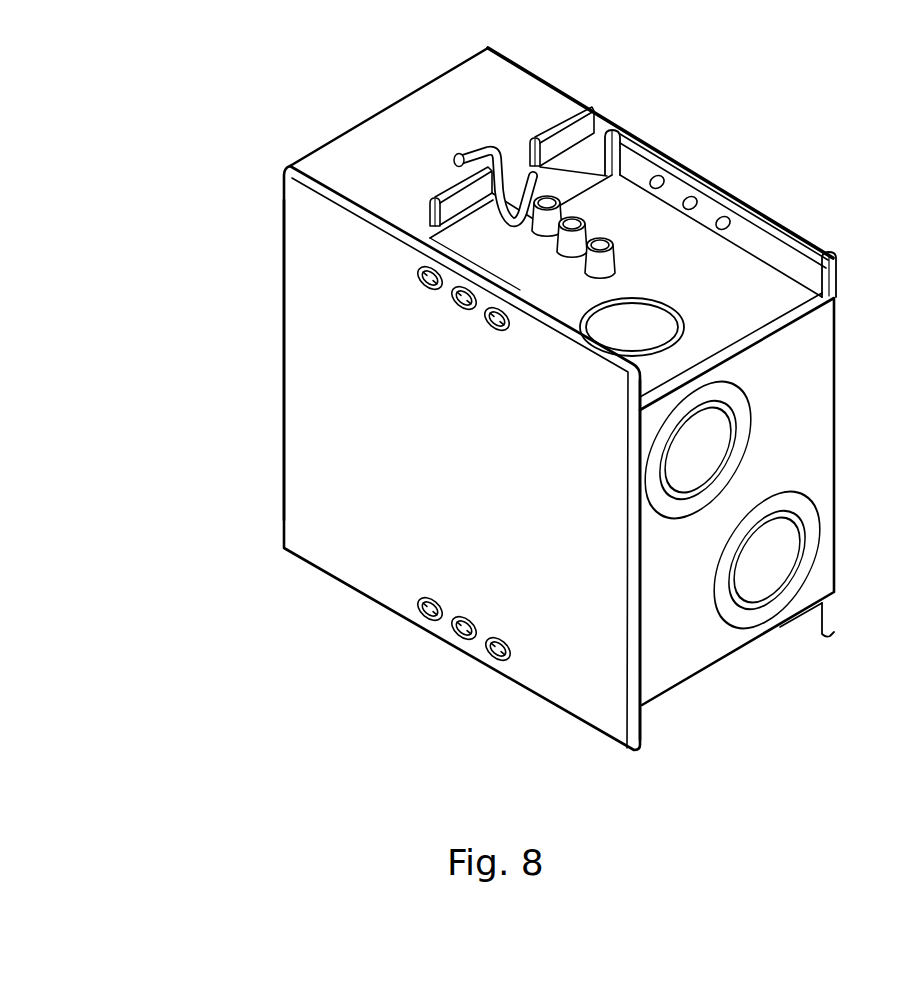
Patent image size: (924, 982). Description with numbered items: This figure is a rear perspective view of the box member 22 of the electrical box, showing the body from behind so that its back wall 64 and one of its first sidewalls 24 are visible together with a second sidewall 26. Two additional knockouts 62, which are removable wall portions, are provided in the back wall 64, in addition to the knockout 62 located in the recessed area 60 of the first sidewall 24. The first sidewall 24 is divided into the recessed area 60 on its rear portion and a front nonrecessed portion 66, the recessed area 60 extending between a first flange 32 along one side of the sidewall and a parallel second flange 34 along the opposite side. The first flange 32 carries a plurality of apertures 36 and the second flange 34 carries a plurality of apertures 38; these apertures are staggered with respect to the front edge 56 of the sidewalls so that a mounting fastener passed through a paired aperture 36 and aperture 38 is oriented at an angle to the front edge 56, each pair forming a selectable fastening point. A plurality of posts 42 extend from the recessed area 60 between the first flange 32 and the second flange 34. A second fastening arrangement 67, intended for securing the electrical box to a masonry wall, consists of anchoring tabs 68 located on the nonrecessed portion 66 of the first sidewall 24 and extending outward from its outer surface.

The box member 22 is at (222, 120).
The first sidewall 24 is at (547, 93).
The second sidewall 26 is at (462, 446).
The first flange 32 is at (633, 381).
The second flange 34 is at (838, 265).
The apertures 36 is at (428, 287).
The apertures 38 is at (658, 180).
The posts 42 is at (602, 243).
The front edge 56 is at (284, 360).
The recessed area 60 is at (729, 301).
The knockout 62 is at (647, 343).
The back wall 64 is at (804, 421).
The nonrecessed portion 66 is at (456, 139).
The second fastening arrangement 67 is at (533, 113).
The anchoring tabs 68 is at (452, 200).